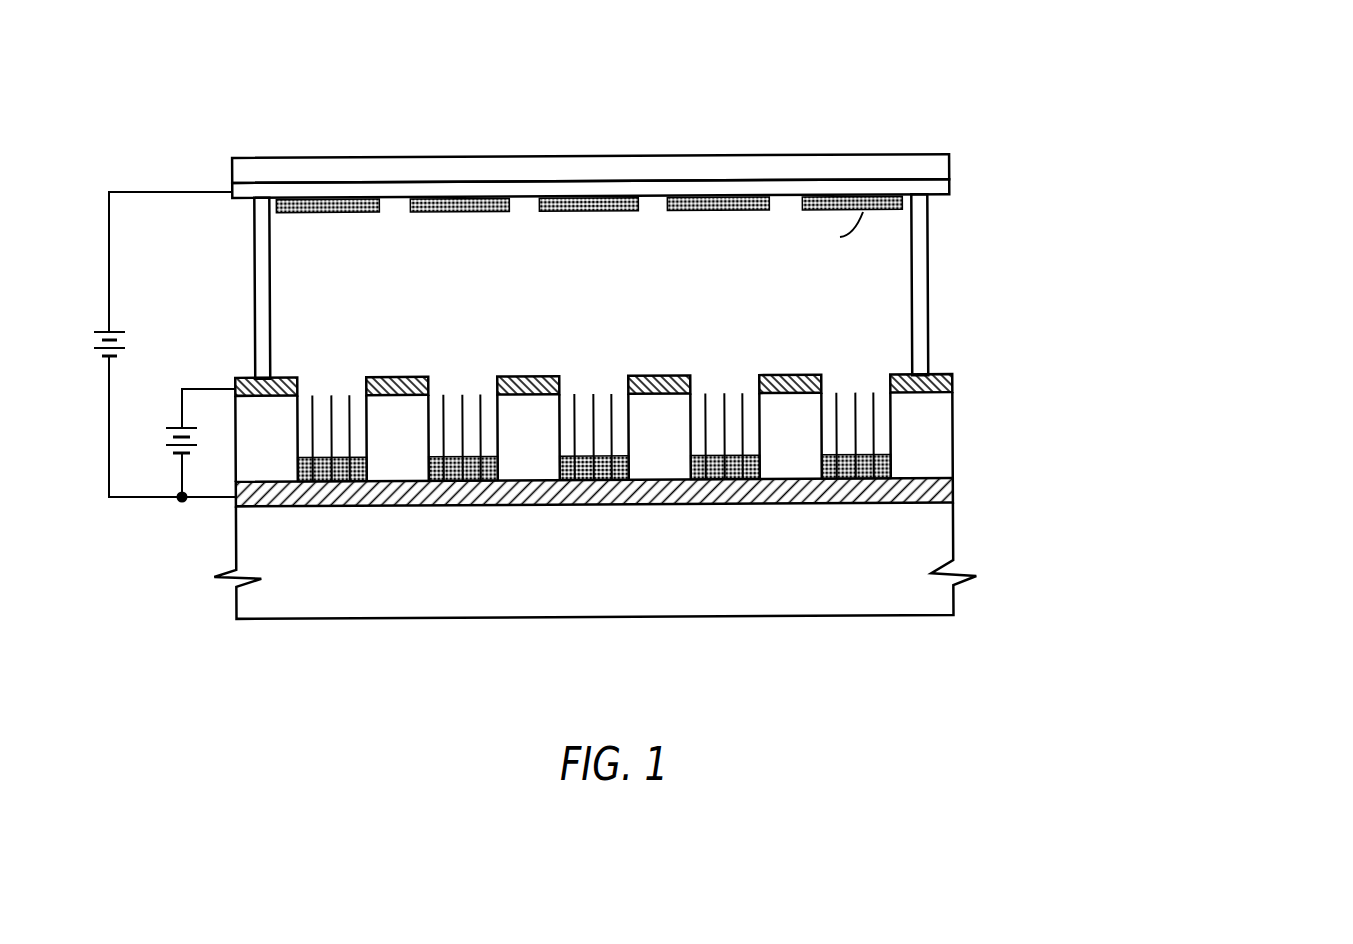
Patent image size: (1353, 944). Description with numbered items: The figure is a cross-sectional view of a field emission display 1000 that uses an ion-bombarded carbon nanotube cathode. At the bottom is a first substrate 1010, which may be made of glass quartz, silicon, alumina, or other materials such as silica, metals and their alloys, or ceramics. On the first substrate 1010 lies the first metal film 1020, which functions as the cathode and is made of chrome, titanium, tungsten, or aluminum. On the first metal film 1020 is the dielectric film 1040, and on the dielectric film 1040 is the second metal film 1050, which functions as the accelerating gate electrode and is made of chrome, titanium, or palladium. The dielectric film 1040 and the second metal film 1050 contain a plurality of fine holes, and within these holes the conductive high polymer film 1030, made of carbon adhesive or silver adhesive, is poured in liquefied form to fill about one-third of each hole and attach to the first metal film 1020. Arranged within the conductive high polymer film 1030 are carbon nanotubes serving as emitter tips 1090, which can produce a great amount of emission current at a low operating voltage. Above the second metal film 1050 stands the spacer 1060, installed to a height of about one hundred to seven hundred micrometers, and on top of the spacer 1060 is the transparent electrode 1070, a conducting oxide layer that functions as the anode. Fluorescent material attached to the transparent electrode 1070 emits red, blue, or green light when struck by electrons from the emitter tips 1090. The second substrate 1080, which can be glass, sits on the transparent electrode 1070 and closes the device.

The field emission display 1000 is at (490, 115).
The first substrate 1010 is at (951, 533).
The first metal film 1020 is at (951, 488).
The conductive high polymer film 1030 is at (452, 472).
The dielectric film 1040 is at (945, 430).
The second metal film 1050 is at (951, 377).
The spacer 1060 is at (927, 303).
The transparent electrode 1070 is at (980, 202).
The second substrate 1080 is at (980, 150).
The emitter tips 1090 is at (748, 382).